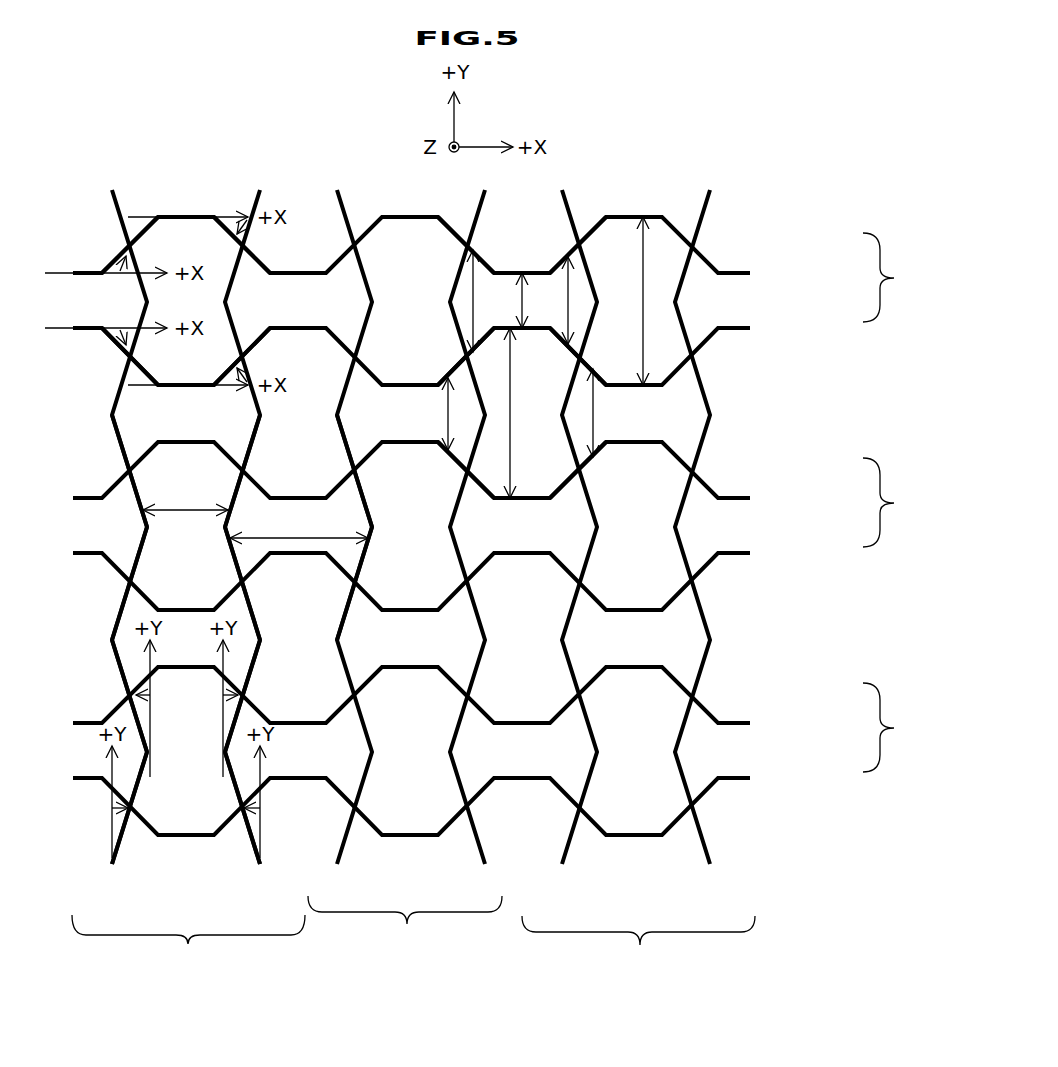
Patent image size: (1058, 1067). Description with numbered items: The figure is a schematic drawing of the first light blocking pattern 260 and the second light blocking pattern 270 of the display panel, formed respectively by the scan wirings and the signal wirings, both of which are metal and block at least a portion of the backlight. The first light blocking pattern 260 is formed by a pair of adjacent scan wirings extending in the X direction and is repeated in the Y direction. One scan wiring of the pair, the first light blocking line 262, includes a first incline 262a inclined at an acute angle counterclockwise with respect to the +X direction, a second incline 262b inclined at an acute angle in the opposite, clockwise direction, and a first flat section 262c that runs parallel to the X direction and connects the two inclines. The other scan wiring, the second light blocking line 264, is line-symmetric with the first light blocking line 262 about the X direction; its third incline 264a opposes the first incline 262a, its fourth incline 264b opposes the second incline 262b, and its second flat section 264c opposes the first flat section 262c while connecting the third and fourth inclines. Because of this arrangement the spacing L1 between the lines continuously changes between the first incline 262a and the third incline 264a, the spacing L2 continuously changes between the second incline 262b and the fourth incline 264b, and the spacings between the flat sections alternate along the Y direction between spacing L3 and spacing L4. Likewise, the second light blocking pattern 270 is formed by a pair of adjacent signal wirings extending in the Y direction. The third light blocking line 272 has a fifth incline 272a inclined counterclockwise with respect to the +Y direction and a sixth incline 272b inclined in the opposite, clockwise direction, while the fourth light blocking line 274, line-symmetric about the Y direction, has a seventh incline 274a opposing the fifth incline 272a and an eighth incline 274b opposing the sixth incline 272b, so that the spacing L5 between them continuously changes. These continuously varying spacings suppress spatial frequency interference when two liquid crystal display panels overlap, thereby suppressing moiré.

The first light blocking pattern 260 is at (900, 502).
The first light blocking line 262 is at (750, 273).
The second light blocking line 264 is at (750, 328).
The second light blocking pattern 270 is at (413, 935).
The third light blocking line 272 is at (112, 864).
The fourth light blocking line 274 is at (260, 864).
The first incline 262a is at (118, 260).
The second incline 262b is at (265, 266).
The first flat section 262c is at (186, 216).
The third incline 264a is at (118, 343).
The fourth incline 264b is at (265, 334).
The second flat section 264c is at (186, 387).
The fifth incline 272a is at (132, 484).
The sixth incline 272b is at (133, 570).
The seventh incline 274a is at (240, 483).
The eighth incline 274b is at (239, 569).
The spacing L1 is at (595, 357).
The spacing L2 is at (475, 350).
The spacing L3 is at (537, 300).
The spacing L4 is at (591, 357).
The spacing L5 is at (255, 509).